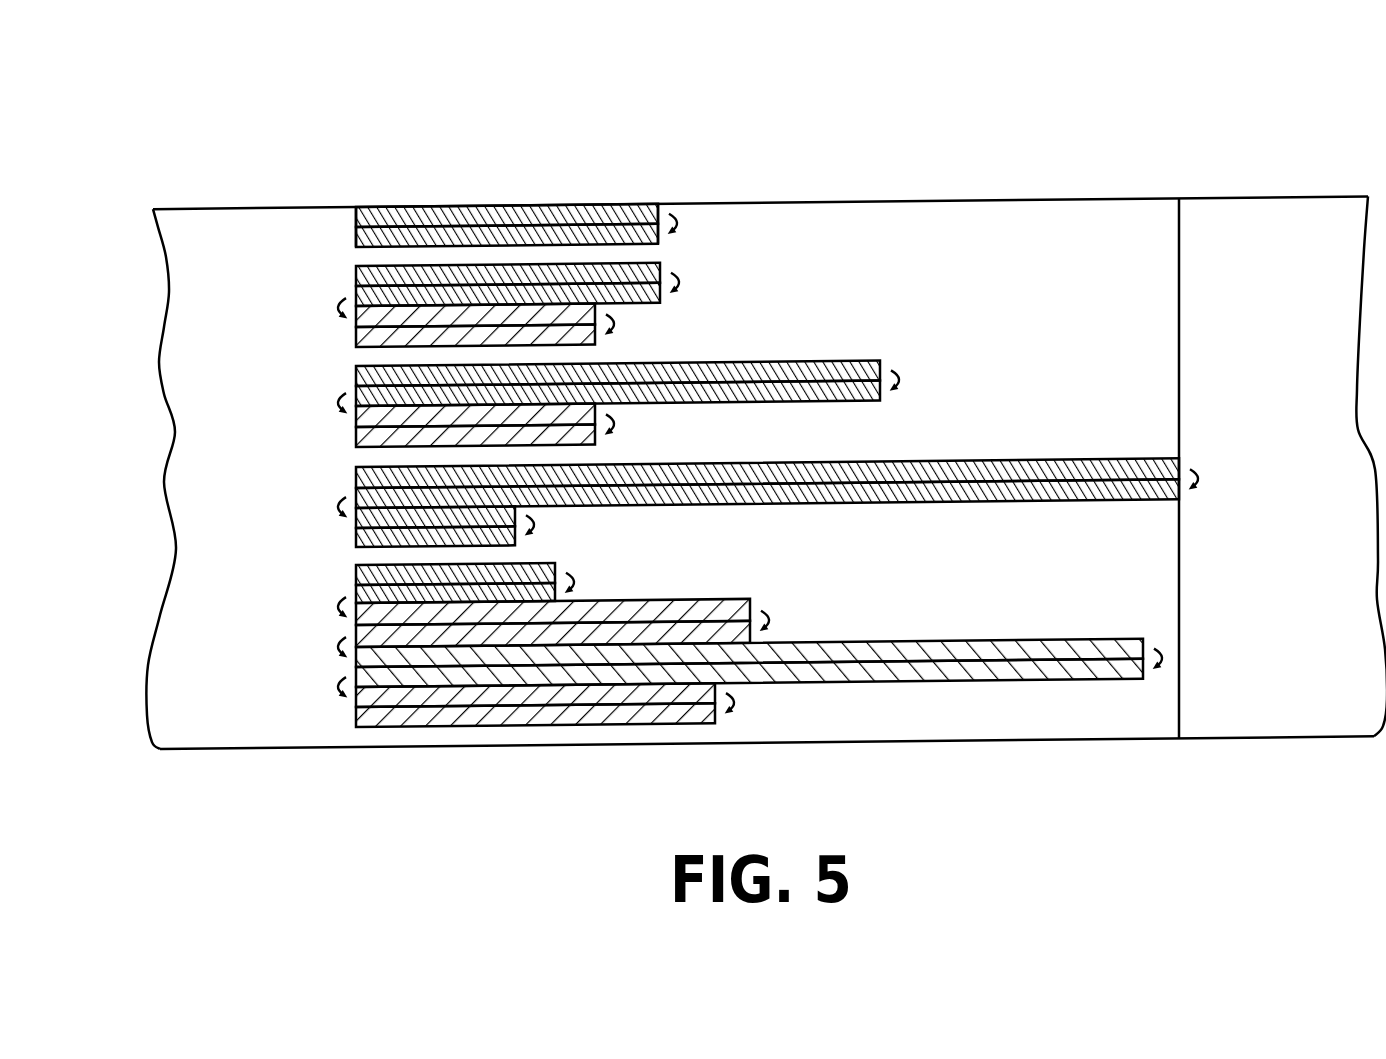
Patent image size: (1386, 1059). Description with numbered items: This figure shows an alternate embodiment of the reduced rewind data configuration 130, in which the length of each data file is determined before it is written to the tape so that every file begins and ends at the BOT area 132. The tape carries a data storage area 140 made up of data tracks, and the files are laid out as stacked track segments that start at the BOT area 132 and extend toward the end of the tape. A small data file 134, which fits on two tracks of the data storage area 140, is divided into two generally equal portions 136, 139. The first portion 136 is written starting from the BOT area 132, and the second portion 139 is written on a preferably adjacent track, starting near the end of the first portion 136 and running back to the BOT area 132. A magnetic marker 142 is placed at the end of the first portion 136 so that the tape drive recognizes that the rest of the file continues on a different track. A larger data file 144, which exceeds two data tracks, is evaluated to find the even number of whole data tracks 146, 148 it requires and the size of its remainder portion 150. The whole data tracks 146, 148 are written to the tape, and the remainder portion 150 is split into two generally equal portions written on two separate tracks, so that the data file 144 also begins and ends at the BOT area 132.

The reduced rewind data configuration 130 is at (1238, 88).
The BOT area 132 is at (175, 698).
The data file 134 is at (476, 167).
The first portion 136 is at (354, 218).
The second portion 139 is at (350, 240).
The data storage area 140 is at (1057, 186).
The magnetic marker 142 is at (680, 206).
The data file 144 is at (777, 465).
The data track 146 is at (933, 458).
The data track 148 is at (1100, 500).
The remainder portion 150 is at (356, 537).